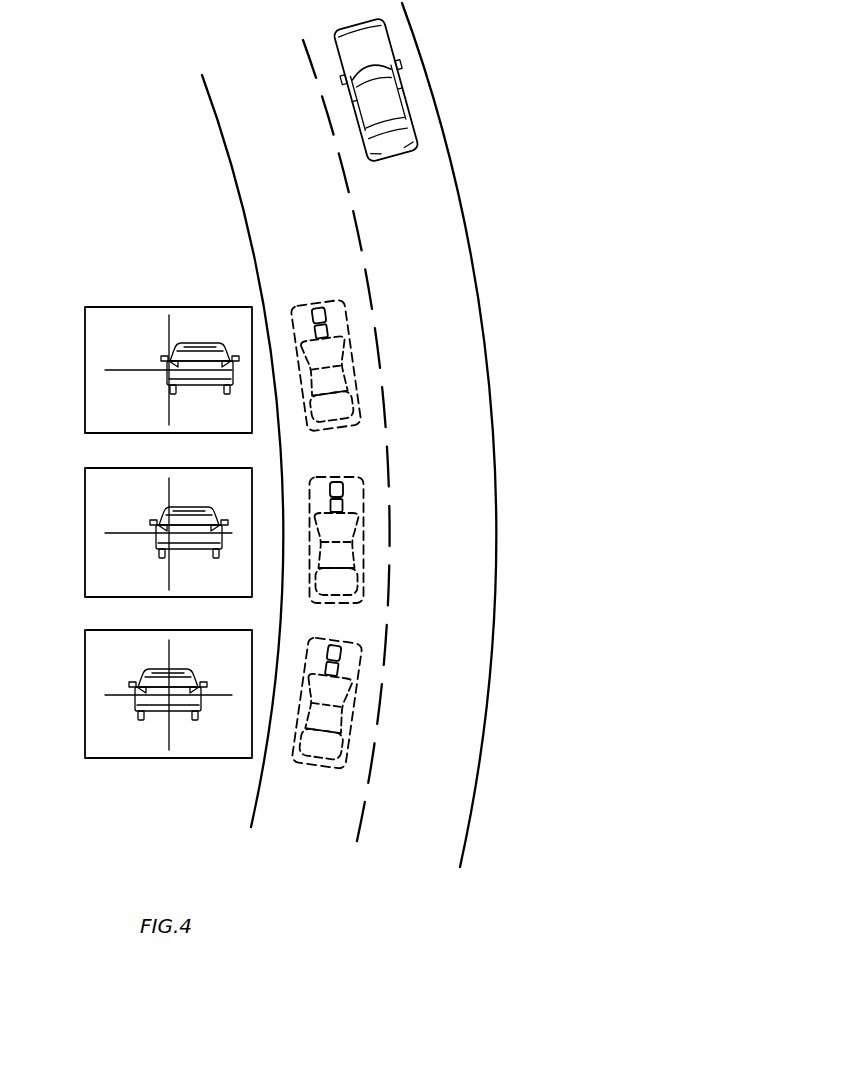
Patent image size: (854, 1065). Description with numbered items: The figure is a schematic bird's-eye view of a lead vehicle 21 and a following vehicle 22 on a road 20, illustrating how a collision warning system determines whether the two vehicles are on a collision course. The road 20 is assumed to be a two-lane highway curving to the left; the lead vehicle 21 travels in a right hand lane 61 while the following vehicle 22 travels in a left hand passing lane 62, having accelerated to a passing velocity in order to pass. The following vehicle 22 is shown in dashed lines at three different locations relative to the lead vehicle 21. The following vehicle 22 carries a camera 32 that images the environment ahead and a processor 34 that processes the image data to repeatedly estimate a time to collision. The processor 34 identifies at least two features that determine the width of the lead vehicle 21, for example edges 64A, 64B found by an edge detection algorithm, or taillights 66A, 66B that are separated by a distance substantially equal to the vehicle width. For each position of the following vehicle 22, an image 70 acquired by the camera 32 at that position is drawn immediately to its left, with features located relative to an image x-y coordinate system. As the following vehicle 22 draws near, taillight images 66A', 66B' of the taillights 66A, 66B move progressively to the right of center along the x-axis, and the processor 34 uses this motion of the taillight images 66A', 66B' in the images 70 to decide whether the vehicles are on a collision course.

The road 20 is at (462, 312).
The lead vehicle 21 is at (365, 403).
The following vehicle 22 is at (402, 78).
The camera 32 is at (328, 313).
The processor 34 is at (330, 333).
The right hand lane 61 is at (276, 801).
The left hand passing lane 62 is at (462, 363).
The edge of lead vehicle 64A is at (412, 122).
The edge of lead vehicle 64B is at (358, 137).
The taillight 66A is at (458, 160).
The taillight 66B is at (391, 188).
The image 70 is at (85, 355).
The taillight image 66A' is at (223, 529).
The taillight image 66B' is at (99, 501).